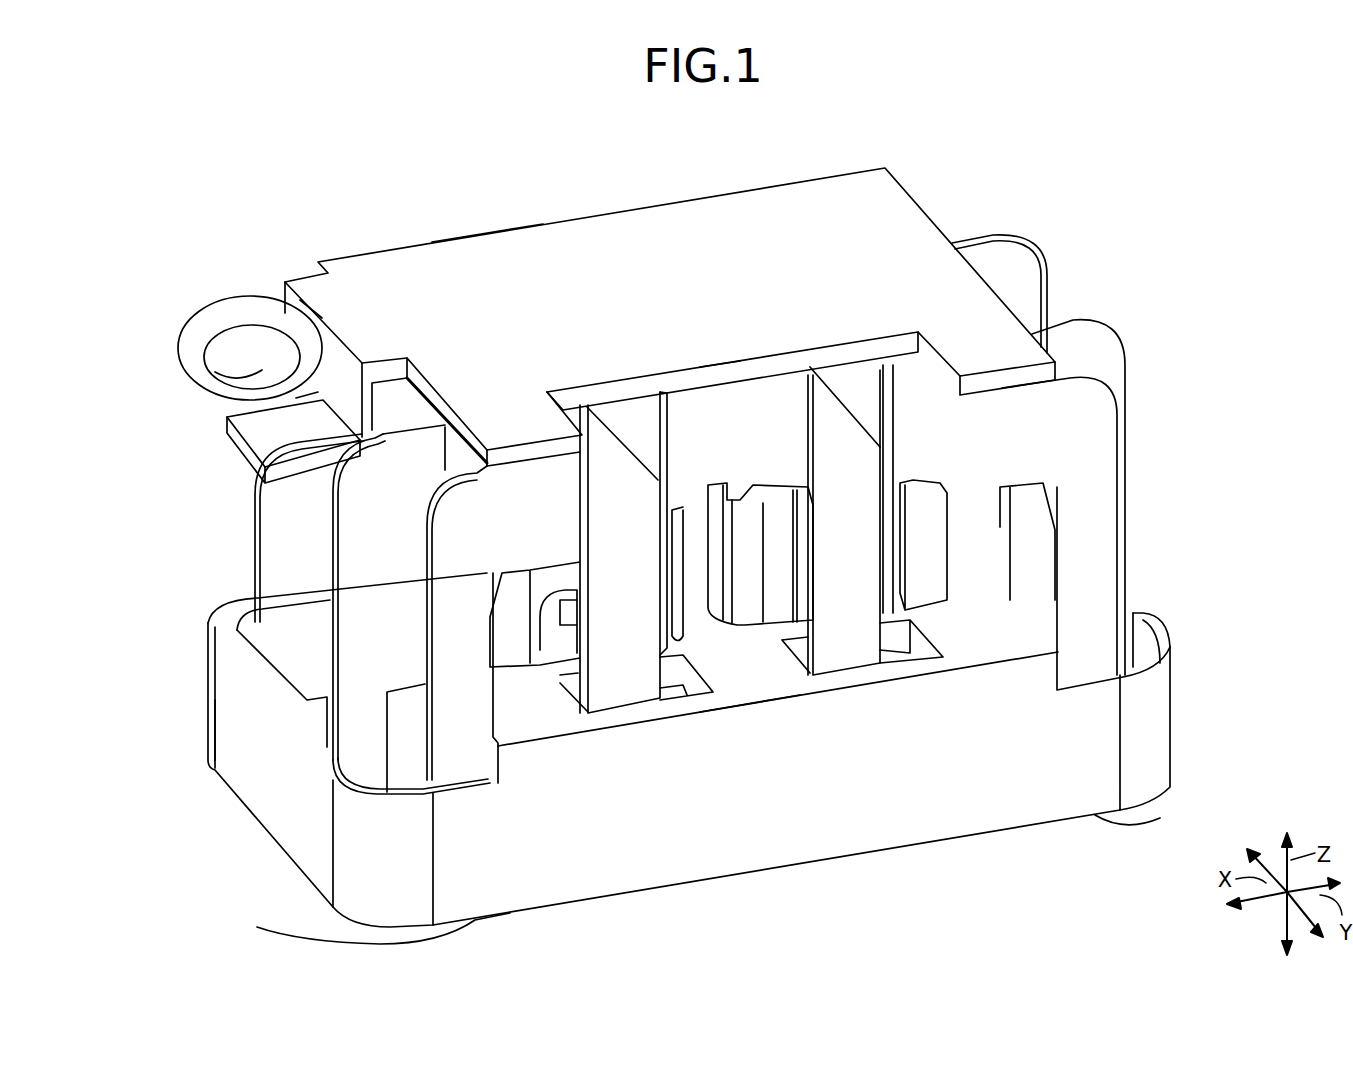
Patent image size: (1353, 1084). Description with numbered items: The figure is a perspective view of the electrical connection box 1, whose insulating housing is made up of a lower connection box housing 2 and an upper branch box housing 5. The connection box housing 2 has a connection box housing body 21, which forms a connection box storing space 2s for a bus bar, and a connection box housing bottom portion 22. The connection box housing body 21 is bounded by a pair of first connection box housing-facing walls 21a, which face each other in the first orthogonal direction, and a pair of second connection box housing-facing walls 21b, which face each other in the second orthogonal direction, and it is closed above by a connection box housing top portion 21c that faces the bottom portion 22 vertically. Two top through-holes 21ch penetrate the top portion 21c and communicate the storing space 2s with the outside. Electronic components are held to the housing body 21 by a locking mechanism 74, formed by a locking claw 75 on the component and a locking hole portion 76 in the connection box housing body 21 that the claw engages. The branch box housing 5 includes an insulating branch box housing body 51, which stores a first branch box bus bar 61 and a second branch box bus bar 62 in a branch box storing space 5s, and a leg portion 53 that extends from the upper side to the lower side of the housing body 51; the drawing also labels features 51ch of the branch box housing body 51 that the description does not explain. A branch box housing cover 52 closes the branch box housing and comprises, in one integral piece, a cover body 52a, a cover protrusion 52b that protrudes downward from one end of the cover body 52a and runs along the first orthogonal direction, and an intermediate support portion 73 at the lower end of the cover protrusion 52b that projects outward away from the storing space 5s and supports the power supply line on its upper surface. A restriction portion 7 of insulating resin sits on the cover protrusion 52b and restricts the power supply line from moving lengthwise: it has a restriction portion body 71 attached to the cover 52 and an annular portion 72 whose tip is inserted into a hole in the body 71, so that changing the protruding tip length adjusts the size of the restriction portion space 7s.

The electrical connection box 1 is at (1026, 191).
The connection box housing 2 is at (114, 845).
The connection box storing space 2s is at (257, 776).
The branch box housing 5 is at (985, 128).
The branch box storing space 5s is at (720, 428).
The restriction portion 7 is at (195, 196).
The restriction portion space 7s is at (240, 377).
The connection box housing body 21 is at (300, 832).
The first connection box housing-facing walls 21a is at (865, 817).
The second connection box housing-facing walls 21b is at (237, 712).
The connection box housing top portion 21c is at (757, 665).
The top through-holes 21ch is at (697, 680).
The connection box housing bottom portion 22 is at (257, 927).
The branch box housing body 51 is at (907, 377).
The channel partition walls 51ch is at (653, 427).
The branch box housing cover 52 is at (355, 156).
The cover body 52a is at (453, 262).
The cover protrusion 52b is at (340, 367).
The leg portion 53 is at (367, 590).
The first branch box bus bar 61 is at (628, 665).
The second branch box bus bar 62 is at (843, 640).
The restriction portion body 71 is at (307, 337).
The annular portion 72 is at (205, 327).
The intermediate support portion 73 is at (268, 427).
The locking mechanism 74 is at (610, 830).
The locking claw 75 is at (572, 625).
The locking hole portion 76 is at (565, 640).